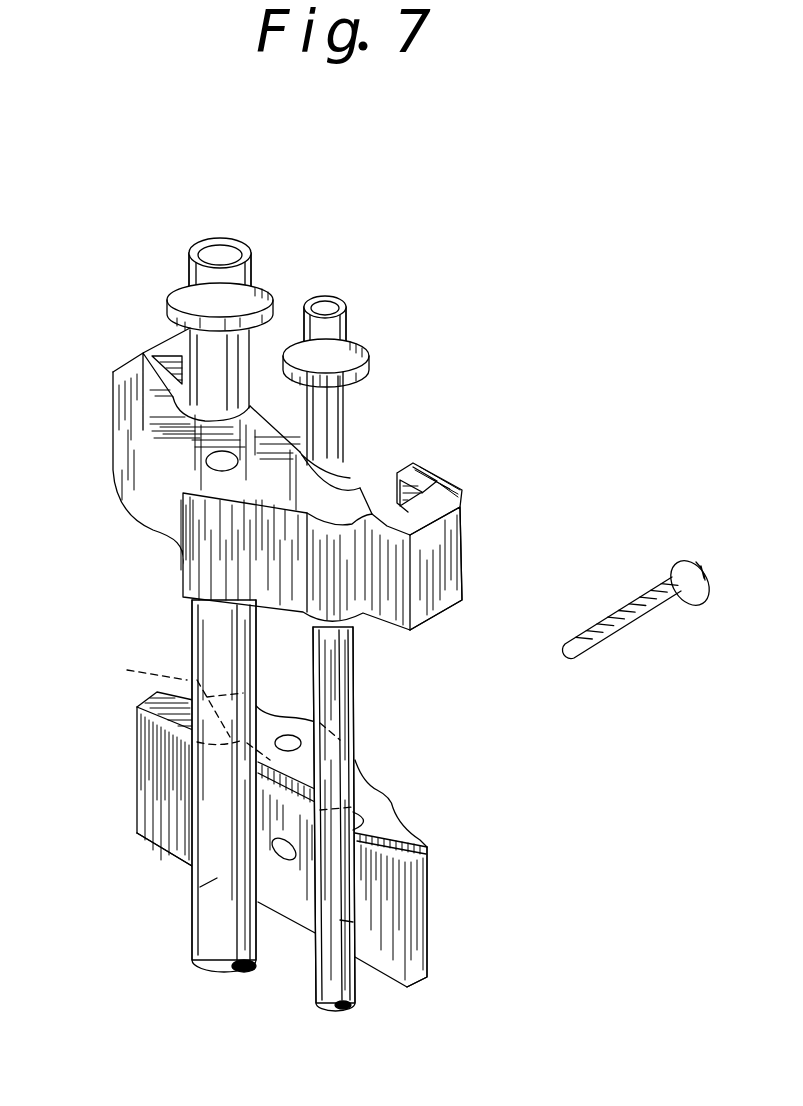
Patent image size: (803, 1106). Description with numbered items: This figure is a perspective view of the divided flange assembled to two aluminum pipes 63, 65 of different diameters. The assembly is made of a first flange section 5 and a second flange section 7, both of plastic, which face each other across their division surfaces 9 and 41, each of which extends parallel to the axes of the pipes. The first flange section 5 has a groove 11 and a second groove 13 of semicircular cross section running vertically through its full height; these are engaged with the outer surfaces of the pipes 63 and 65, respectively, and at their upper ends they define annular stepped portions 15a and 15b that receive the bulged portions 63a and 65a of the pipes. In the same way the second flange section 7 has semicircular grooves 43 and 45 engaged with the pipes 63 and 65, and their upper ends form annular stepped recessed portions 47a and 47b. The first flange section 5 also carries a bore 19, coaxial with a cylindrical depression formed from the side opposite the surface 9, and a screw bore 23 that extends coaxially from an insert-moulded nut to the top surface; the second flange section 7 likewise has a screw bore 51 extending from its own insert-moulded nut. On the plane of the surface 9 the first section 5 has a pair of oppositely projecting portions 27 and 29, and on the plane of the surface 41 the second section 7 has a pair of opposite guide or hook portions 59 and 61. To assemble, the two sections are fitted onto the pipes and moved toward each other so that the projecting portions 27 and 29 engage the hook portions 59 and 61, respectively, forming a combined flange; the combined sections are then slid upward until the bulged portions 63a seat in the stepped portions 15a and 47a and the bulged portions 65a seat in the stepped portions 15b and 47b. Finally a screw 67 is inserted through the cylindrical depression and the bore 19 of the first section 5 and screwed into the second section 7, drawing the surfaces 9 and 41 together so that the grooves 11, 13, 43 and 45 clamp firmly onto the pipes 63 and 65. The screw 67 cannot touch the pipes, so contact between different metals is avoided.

The first flange section 5 is at (377, 800).
The second flange section 7 is at (167, 507).
The surface 9 is at (160, 817).
The groove 11 is at (200, 887).
The second groove 13 is at (353, 922).
The annular stepped portion 15a is at (211, 707).
The annular stepped portion 15b is at (367, 827).
The bore 19 is at (290, 847).
The screw bore 23 is at (288, 740).
The projecting portion 27 is at (147, 750).
The projecting portion 29 is at (420, 947).
The surface 41 is at (303, 467).
The groove 43 is at (278, 365).
The second groove 45 is at (325, 462).
The annular stepped recessed portion 47a is at (172, 405).
The annular stepped recessed portion 47b is at (360, 483).
The screw bore 51 is at (207, 456).
The guide or hook portion 59 is at (145, 362).
The guide or hook portion 61 is at (466, 528).
The pipe 63 is at (210, 640).
The bulged portion 63a is at (218, 403).
The pipe 65 is at (340, 690).
The bulged portion 65a is at (368, 348).
The screw 67 is at (648, 605).